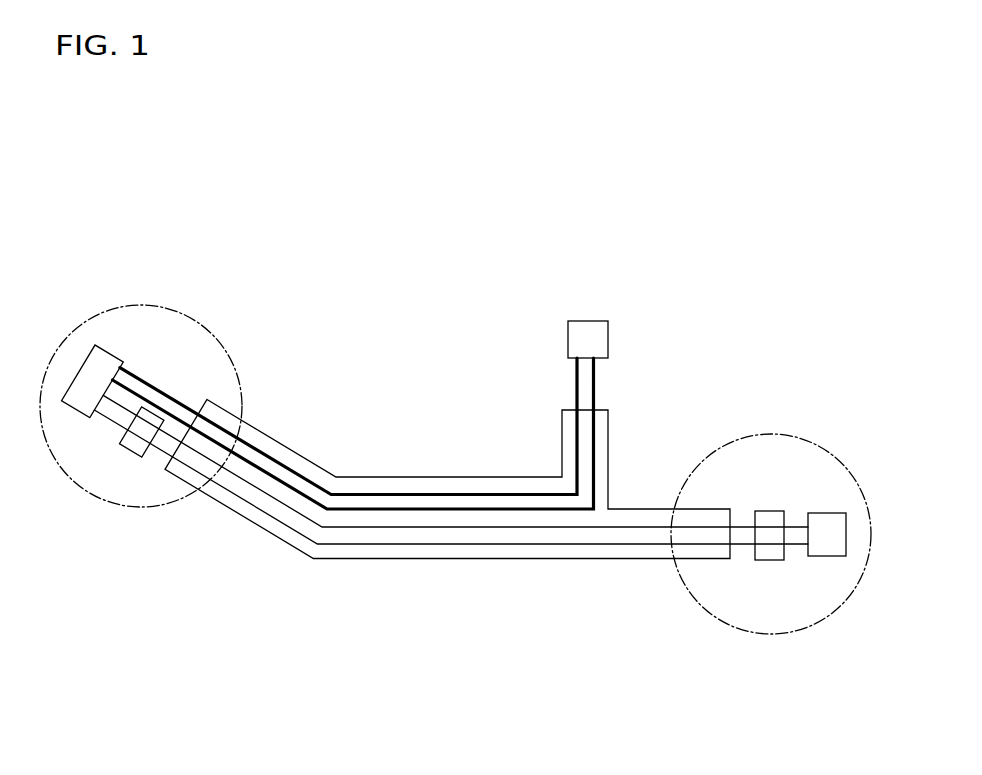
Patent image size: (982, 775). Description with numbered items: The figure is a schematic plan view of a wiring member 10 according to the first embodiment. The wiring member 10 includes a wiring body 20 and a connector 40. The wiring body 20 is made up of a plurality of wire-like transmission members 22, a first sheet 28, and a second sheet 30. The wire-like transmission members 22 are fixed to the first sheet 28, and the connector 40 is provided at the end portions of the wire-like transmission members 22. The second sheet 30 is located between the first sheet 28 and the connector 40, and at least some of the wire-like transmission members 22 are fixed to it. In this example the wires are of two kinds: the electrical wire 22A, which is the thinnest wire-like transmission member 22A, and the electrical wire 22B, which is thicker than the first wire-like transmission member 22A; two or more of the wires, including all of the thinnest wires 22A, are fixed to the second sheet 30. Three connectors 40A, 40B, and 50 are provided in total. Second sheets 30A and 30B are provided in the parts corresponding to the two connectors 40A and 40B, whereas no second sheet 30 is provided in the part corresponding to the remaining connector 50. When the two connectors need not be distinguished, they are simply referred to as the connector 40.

The wiring member 10 is at (175, 170).
The wiring body 20 is at (396, 571).
The first sheet 28 is at (477, 560).
The wire-like transmission members 22 is at (451, 451).
The first wire-like transmission member 22A is at (746, 543).
The second wire-like transmission member 22B is at (578, 382).
The second sheet 30 is at (442, 516).
The second sheet 30A is at (763, 562).
The second sheet 30B is at (135, 448).
The connector 40 is at (472, 412).
The connector 40A is at (822, 513).
The connector 40B is at (92, 363).
The connector 50 is at (600, 338).